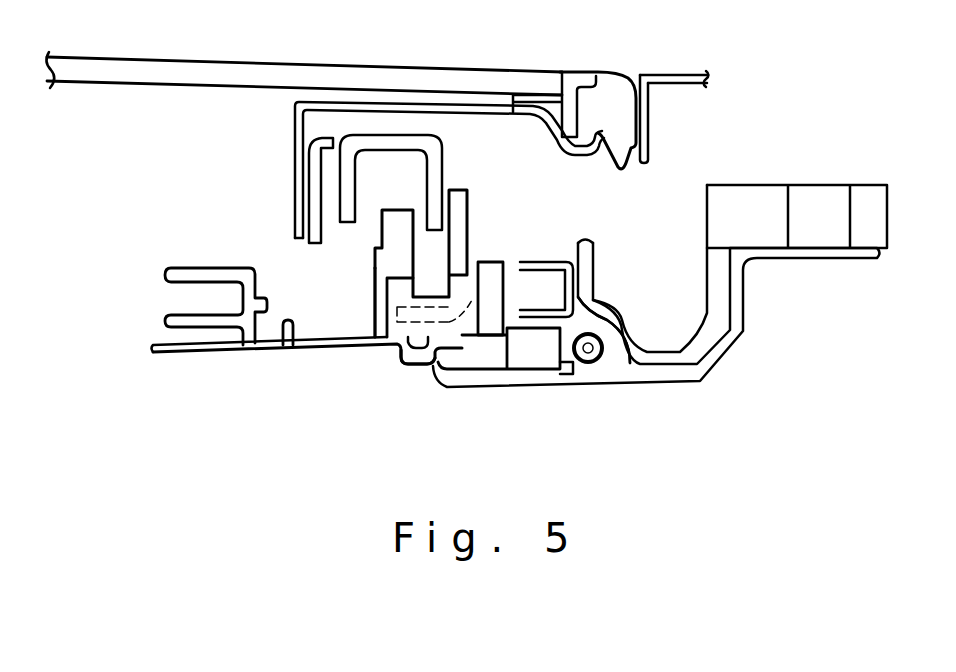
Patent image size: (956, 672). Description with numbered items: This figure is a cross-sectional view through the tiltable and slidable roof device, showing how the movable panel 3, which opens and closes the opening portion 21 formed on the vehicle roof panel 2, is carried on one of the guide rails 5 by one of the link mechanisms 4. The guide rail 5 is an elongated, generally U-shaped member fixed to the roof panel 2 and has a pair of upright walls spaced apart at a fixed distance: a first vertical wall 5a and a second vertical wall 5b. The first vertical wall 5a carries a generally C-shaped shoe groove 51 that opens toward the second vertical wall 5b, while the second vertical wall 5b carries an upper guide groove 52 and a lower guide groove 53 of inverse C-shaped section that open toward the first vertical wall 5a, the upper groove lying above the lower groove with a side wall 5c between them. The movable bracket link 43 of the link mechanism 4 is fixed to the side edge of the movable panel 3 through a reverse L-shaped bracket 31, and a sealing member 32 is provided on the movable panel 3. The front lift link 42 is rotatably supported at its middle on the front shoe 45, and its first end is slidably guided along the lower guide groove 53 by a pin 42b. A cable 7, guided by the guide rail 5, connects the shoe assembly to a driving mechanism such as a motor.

The roof panel 2 is at (662, 73).
The movable panel 3 is at (273, 73).
The link mechanism 4 is at (267, 207).
The guide rail 5 is at (753, 344).
The first vertical wall 5a is at (378, 298).
The second vertical wall 5b is at (601, 352).
The side wall 5c is at (520, 313).
The cable 7 is at (593, 343).
The opening portion 21 is at (640, 160).
The bracket 31 is at (453, 110).
The sealing member 32 is at (627, 117).
The front lift link 42 is at (457, 317).
The pin 42b is at (527, 357).
The movable bracket link 43 is at (388, 143).
The front shoe 45 is at (422, 347).
The shoe groove 51 is at (397, 333).
The upper guide groove 52 is at (563, 290).
The lower guide groove 53 is at (561, 374).